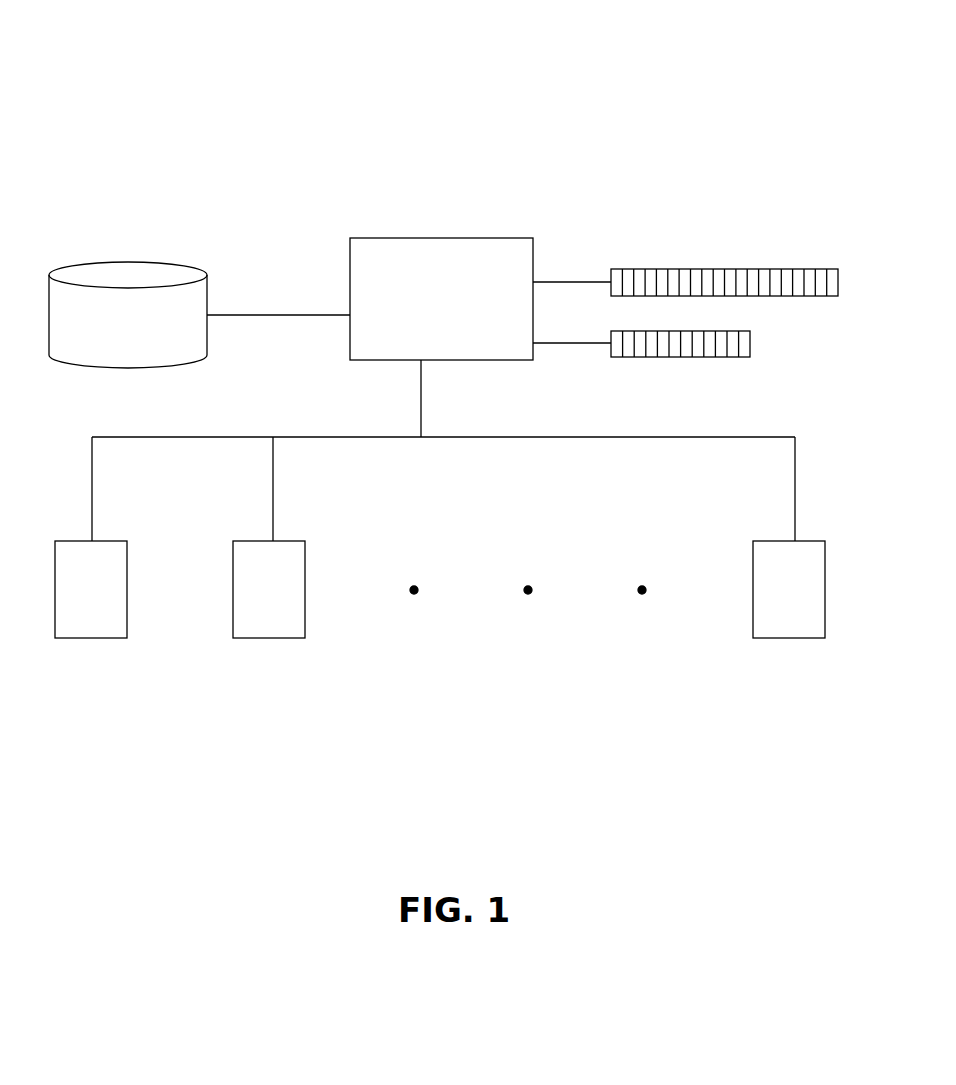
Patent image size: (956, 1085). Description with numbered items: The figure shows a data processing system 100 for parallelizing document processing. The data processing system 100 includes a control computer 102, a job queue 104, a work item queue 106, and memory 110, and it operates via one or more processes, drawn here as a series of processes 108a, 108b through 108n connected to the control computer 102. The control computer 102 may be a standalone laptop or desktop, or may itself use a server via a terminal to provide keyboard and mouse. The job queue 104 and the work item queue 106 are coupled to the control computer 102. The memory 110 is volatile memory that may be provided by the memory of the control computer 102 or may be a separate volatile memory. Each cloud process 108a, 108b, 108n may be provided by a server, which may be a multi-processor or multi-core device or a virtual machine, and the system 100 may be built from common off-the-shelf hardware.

The data processing system 100 is at (447, 46).
The control computer 102 is at (495, 238).
The job queue 104 is at (750, 350).
The work item queue 106 is at (708, 269).
The process 108a is at (80, 640).
The process 108b is at (278, 640).
The process 108n is at (790, 640).
The memory 110 is at (128, 260).